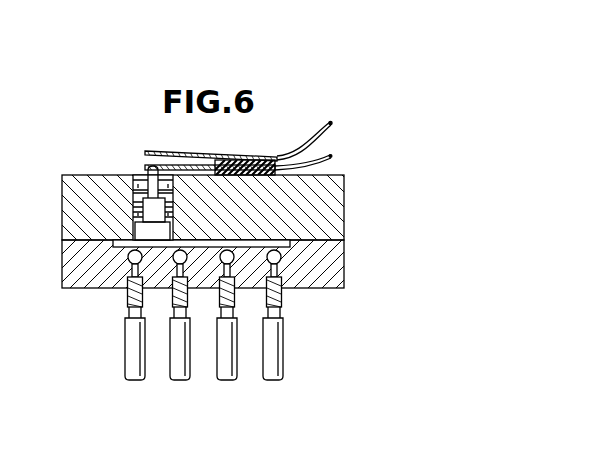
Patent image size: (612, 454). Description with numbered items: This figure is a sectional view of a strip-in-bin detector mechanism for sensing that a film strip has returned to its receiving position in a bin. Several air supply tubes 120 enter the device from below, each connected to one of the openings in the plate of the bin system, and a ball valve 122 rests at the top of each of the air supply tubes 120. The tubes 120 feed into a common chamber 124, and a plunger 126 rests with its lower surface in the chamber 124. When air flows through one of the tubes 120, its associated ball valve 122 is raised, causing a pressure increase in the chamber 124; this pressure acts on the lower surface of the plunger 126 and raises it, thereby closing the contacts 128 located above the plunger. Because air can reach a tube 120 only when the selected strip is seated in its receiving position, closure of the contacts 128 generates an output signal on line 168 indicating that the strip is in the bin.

The air supply tube 120 is at (143, 367).
The ball valve 122 is at (277, 260).
The chamber 124 is at (277, 243).
The plunger 126 is at (138, 230).
The contacts 128 is at (150, 157).
The line 168 is at (306, 139).